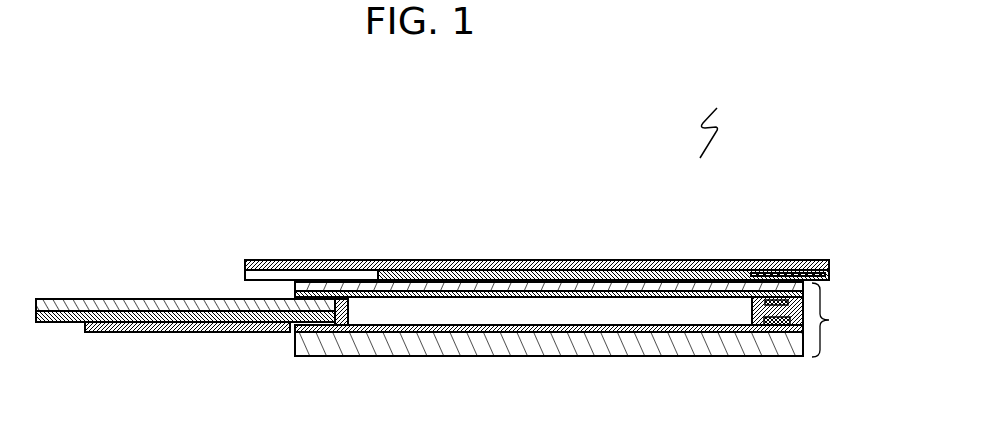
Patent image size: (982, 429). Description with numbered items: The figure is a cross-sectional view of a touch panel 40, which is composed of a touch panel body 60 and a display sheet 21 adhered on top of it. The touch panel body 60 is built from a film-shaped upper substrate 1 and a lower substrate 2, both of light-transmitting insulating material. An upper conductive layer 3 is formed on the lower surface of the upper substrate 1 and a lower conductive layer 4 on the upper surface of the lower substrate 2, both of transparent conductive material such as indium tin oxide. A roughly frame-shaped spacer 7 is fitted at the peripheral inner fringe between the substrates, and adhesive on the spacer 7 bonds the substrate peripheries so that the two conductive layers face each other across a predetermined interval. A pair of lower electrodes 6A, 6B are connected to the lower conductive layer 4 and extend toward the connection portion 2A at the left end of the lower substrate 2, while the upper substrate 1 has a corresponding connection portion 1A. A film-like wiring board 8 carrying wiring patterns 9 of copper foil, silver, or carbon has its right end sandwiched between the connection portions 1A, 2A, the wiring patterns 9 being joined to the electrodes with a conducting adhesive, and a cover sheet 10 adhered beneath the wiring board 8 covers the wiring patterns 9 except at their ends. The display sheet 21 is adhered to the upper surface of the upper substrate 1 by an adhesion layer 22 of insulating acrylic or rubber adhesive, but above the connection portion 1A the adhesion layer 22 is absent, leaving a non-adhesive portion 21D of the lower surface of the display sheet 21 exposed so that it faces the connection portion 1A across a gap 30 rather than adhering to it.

The upper substrate 1 is at (535, 246).
The connection portion 1A is at (317, 287).
The lower substrate 2 is at (540, 377).
The connection portion 2A is at (315, 345).
The upper conductive layer 3 is at (605, 293).
The lower conductive layer 4 is at (400, 333).
The lower electrode 6A is at (337, 330).
The lower electrode 6B is at (787, 328).
The spacer 7 is at (790, 278).
The wiring board 8 is at (150, 305).
The wiring pattern 9 is at (89, 308).
The cover sheet 10 is at (150, 323).
The display sheet 21 is at (552, 267).
The non-adhesive portion 21D is at (288, 273).
The adhesion layer 22 is at (448, 277).
The gap 30 is at (515, 291).
The touch panel 40 is at (723, 122).
The touch panel body 60 is at (839, 320).